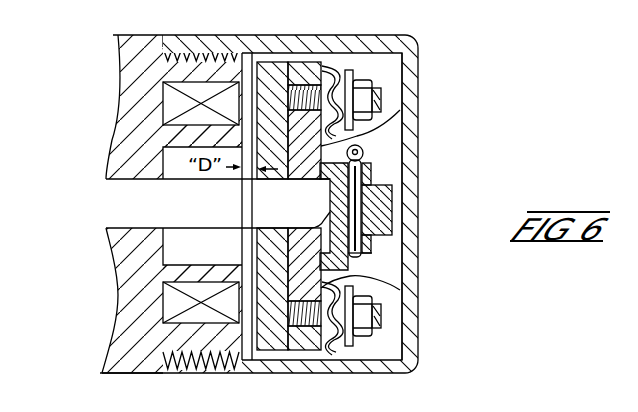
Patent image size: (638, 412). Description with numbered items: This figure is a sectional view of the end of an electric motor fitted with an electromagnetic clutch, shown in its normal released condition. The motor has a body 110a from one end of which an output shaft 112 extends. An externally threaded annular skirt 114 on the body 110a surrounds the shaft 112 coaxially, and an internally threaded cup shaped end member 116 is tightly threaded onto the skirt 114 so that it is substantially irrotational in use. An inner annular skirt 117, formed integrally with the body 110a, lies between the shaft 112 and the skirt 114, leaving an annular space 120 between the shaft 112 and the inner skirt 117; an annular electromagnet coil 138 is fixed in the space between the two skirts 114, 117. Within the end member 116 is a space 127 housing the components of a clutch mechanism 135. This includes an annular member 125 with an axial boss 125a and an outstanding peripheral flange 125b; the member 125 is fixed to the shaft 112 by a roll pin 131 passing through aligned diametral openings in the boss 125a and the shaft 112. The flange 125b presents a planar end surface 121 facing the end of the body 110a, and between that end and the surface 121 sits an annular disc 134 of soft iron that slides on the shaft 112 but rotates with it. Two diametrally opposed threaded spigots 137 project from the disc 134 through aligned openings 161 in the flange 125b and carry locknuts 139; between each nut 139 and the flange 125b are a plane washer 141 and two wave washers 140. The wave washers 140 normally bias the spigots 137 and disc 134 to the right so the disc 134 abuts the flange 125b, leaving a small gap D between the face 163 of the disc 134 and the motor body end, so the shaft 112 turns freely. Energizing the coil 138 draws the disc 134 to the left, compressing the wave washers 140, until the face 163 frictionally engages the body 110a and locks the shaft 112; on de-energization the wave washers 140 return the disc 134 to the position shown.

The body 110a is at (130, 362).
The output shaft 112 is at (132, 203).
The annular skirt 114 is at (167, 70).
The cup shaped end member 116 is at (412, 53).
The inner annular skirt 117 is at (200, 138).
The annular space 120 is at (173, 163).
The planar end surface 121 is at (403, 272).
The annular member 125 is at (372, 255).
The axial boss 125a is at (370, 175).
The peripheral flange 125b is at (303, 72).
The space 127 is at (392, 157).
The roll pin 131 is at (364, 152).
The annular disc 134 is at (272, 88).
The clutch mechanism 135 is at (340, 58).
The spigots 137 is at (313, 92).
The electromagnet coil 138 is at (175, 102).
The locknuts 139 is at (347, 70).
The wave washers 140 is at (366, 78).
The plane washer 141 is at (364, 77).
The openings 161 is at (400, 110).
The face 163 is at (249, 100).